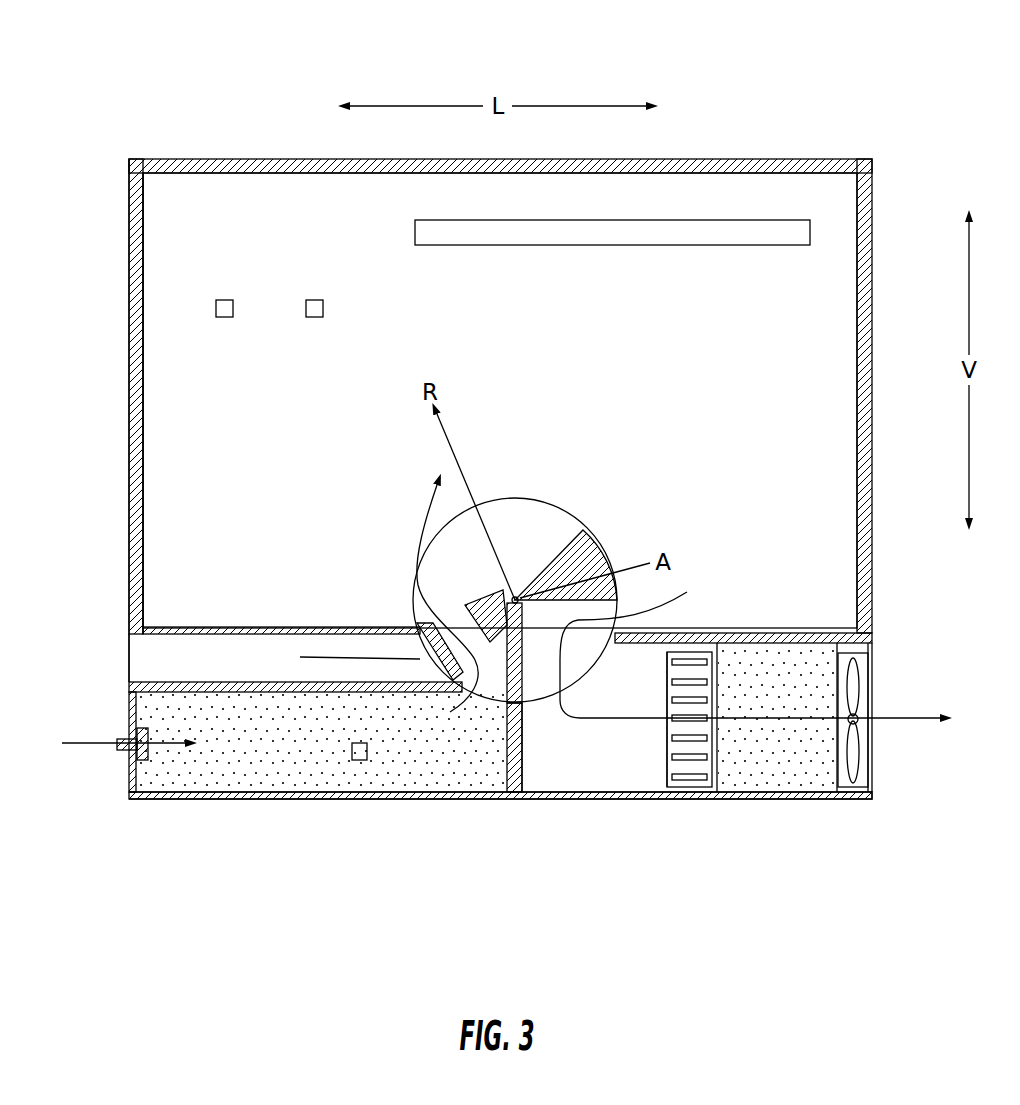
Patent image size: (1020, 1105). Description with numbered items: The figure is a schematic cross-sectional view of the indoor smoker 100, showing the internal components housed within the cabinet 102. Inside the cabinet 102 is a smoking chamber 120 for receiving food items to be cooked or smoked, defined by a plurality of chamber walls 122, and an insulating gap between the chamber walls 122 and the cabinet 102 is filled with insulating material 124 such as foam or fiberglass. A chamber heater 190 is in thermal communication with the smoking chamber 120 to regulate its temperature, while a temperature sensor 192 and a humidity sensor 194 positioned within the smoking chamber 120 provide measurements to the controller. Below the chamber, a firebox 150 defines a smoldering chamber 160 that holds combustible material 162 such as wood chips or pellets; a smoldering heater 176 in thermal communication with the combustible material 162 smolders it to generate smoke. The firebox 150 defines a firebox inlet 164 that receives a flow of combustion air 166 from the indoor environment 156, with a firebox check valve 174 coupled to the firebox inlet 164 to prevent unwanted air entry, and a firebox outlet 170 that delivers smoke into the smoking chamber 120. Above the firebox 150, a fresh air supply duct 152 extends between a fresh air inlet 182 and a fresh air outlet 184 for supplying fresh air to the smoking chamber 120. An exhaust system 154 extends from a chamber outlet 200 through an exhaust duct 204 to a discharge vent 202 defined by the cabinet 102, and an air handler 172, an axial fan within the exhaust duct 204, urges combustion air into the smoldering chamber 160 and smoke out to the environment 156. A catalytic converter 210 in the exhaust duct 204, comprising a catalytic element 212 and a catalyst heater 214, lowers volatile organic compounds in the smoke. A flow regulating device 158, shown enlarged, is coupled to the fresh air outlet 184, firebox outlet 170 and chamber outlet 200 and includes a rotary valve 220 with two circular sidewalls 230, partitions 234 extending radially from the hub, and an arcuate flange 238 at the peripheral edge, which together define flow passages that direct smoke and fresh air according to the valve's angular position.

The indoor smoker 100 is at (897, 86).
The cabinet 102 is at (877, 313).
The smoking chamber 120 is at (484, 335).
The chamber walls 122 is at (143, 398).
The insulating material 124 is at (130, 452).
The firebox 150 is at (250, 793).
The fresh air supply duct 152 is at (270, 650).
The exhaust system 154 is at (810, 843).
The indoor environment 156 is at (58, 833).
The flow regulating device 158 is at (565, 502).
The smoldering chamber 160 is at (269, 750).
The combustible material 162 is at (226, 785).
The firebox inlet 164 is at (127, 760).
The flow of combustion air 166 is at (90, 746).
The firebox outlet 170 is at (489, 708).
The air handler 172 is at (857, 766).
The firebox check valve 174 is at (128, 739).
The smoldering heater 176 is at (360, 761).
The fresh air inlet 182 is at (124, 655).
The fresh air outlet 184 is at (418, 658).
The chamber heater 190 is at (760, 246).
The temperature sensor 192 is at (232, 300).
The humidity sensor 194 is at (322, 300).
The chamber outlet 200 is at (541, 708).
The discharge vent 202 is at (877, 687).
The exhaust duct 204 is at (606, 763).
The catalytic converter 210 is at (720, 800).
The catalytic element 212 is at (792, 770).
The catalyst heater 214 is at (688, 765).
The rotary valve 220 is at (510, 508).
The circular sidewalls 230 is at (542, 508).
The partitions 234 is at (595, 556).
The arcuate flange 238 is at (428, 628).